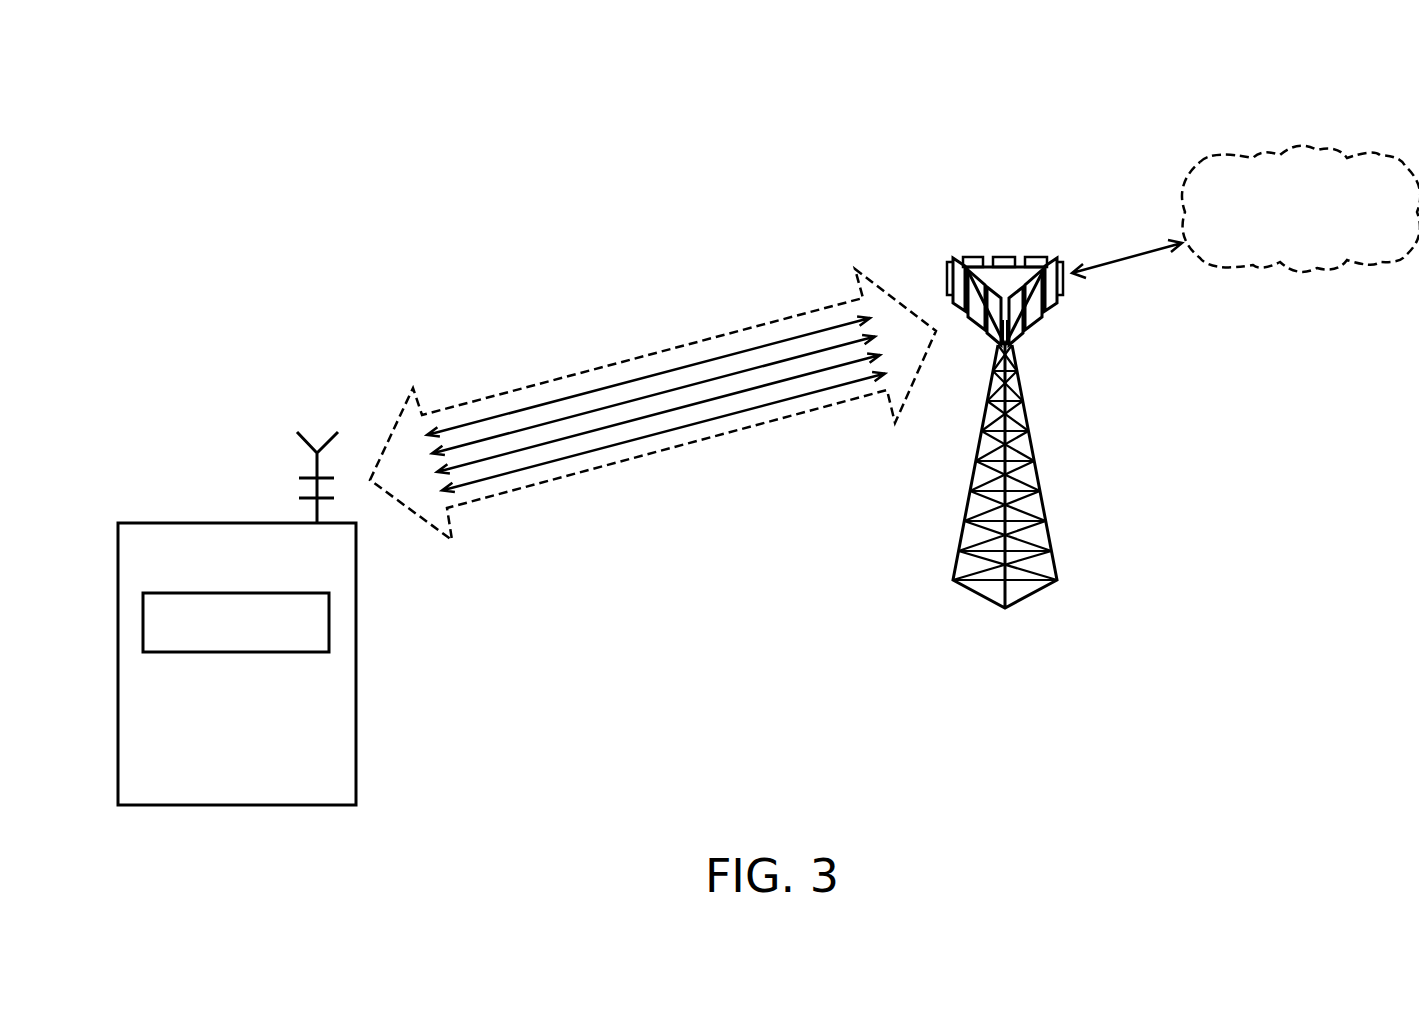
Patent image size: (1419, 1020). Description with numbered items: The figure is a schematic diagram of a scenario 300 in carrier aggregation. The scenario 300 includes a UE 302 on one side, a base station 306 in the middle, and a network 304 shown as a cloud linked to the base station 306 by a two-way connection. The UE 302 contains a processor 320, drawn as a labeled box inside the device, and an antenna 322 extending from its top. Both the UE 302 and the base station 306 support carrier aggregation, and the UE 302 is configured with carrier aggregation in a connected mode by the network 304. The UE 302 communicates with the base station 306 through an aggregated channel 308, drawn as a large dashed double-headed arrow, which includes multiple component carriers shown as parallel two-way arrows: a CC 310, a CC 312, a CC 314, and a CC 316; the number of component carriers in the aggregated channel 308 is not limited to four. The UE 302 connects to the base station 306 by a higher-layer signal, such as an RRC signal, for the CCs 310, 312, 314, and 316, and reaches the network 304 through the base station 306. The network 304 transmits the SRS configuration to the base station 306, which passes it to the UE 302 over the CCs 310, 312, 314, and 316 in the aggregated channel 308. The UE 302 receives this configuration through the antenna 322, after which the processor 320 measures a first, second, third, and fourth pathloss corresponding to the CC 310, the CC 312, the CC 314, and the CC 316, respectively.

The scenario 300 is at (174, 80).
The UE 302 is at (118, 523).
The network 304 is at (1298, 147).
The base station 306 is at (1003, 257).
The aggregated channel 308 is at (470, 403).
The CC 310 is at (767, 343).
The CC 312 is at (708, 380).
The CC 314 is at (648, 415).
The CC 316 is at (590, 450).
The processor 320 is at (145, 593).
The antenna 322 is at (306, 450).